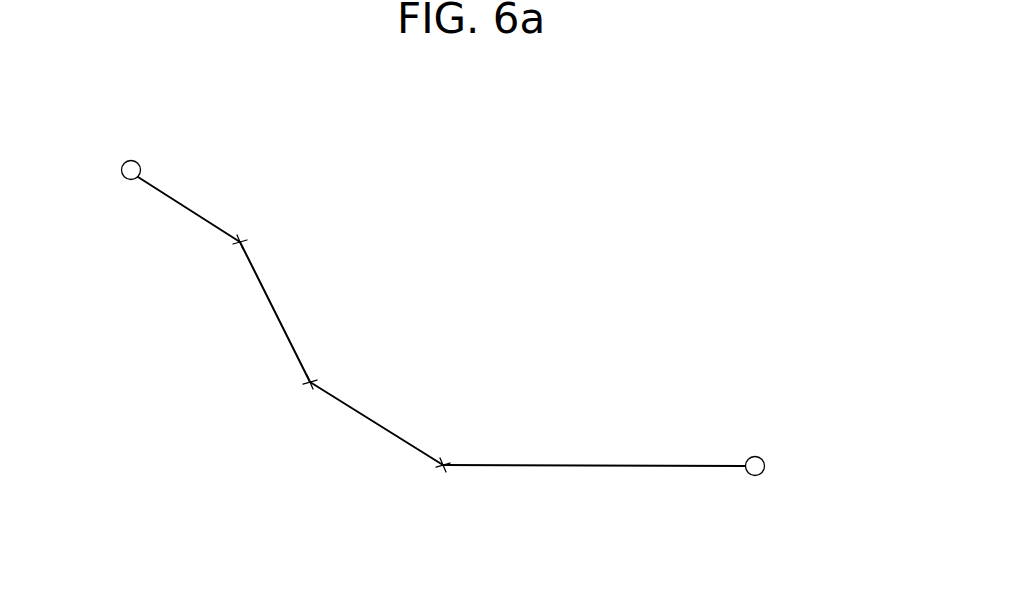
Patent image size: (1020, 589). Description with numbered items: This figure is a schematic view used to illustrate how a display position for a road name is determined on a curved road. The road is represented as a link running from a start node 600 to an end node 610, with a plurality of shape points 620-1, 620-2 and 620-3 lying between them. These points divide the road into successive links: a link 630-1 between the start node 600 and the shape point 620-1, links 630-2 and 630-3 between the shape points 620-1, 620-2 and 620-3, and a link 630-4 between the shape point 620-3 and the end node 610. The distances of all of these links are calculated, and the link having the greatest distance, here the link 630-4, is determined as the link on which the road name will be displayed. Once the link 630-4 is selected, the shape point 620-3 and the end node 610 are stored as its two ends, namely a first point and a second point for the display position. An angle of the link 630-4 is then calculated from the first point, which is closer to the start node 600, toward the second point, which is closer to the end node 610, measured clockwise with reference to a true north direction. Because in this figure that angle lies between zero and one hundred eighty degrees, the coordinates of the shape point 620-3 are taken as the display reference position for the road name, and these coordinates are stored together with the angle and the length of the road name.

The start node 600 is at (138, 162).
The end node 610 is at (750, 457).
The shape point 620-1 is at (243, 239).
The shape point 620-2 is at (313, 377).
The shape point 620-3 is at (447, 458).
The link 630-1 is at (188, 212).
The link 630-2 is at (273, 310).
The link 630-3 is at (373, 423).
The link 630-4 is at (535, 467).